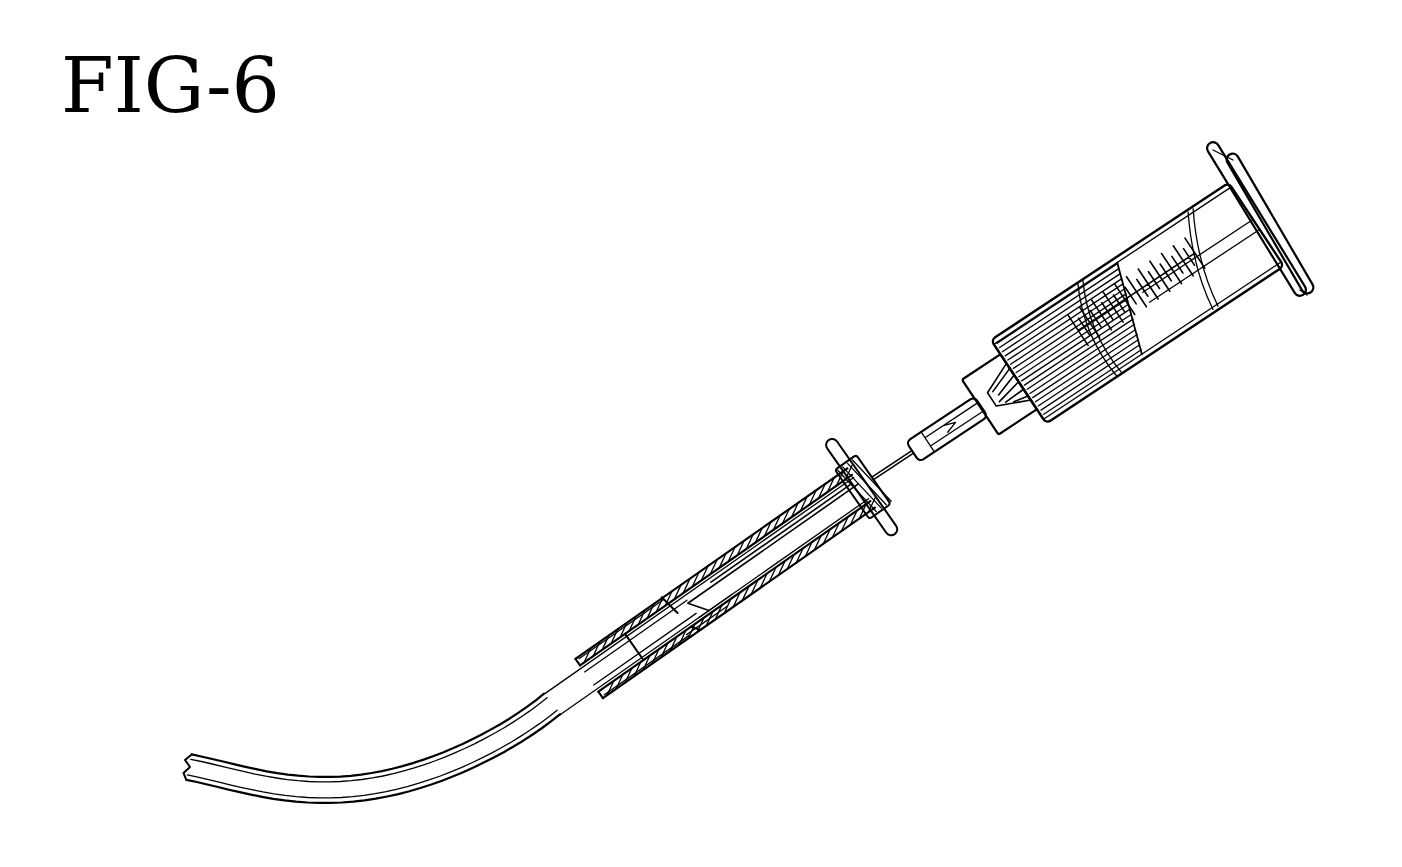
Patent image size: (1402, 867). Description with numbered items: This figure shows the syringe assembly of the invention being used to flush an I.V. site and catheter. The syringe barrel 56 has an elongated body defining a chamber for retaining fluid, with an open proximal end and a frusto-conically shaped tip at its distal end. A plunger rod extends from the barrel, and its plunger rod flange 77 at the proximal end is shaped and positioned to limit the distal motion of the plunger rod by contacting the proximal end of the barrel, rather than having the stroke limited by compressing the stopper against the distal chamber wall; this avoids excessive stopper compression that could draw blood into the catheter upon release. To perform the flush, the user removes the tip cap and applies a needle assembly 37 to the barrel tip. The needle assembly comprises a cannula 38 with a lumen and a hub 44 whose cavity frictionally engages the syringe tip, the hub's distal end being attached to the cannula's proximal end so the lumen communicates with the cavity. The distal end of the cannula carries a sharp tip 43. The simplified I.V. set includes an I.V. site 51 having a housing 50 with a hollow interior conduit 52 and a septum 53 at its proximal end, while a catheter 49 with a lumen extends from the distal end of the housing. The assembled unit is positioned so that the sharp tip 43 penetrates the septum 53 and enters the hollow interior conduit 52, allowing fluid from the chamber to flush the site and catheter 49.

The needle assembly 37 is at (968, 437).
The cannula 38 is at (760, 543).
The sharp tip 43 is at (727, 613).
The hub 44 is at (926, 437).
The catheter 49 is at (515, 748).
The housing 50 is at (817, 555).
The I.V. site 51 is at (715, 627).
The hollow interior conduit 52 is at (665, 600).
The septum 53 is at (880, 497).
The syringe barrel 56 is at (1085, 290).
The plunger rod flange 77 is at (1283, 229).